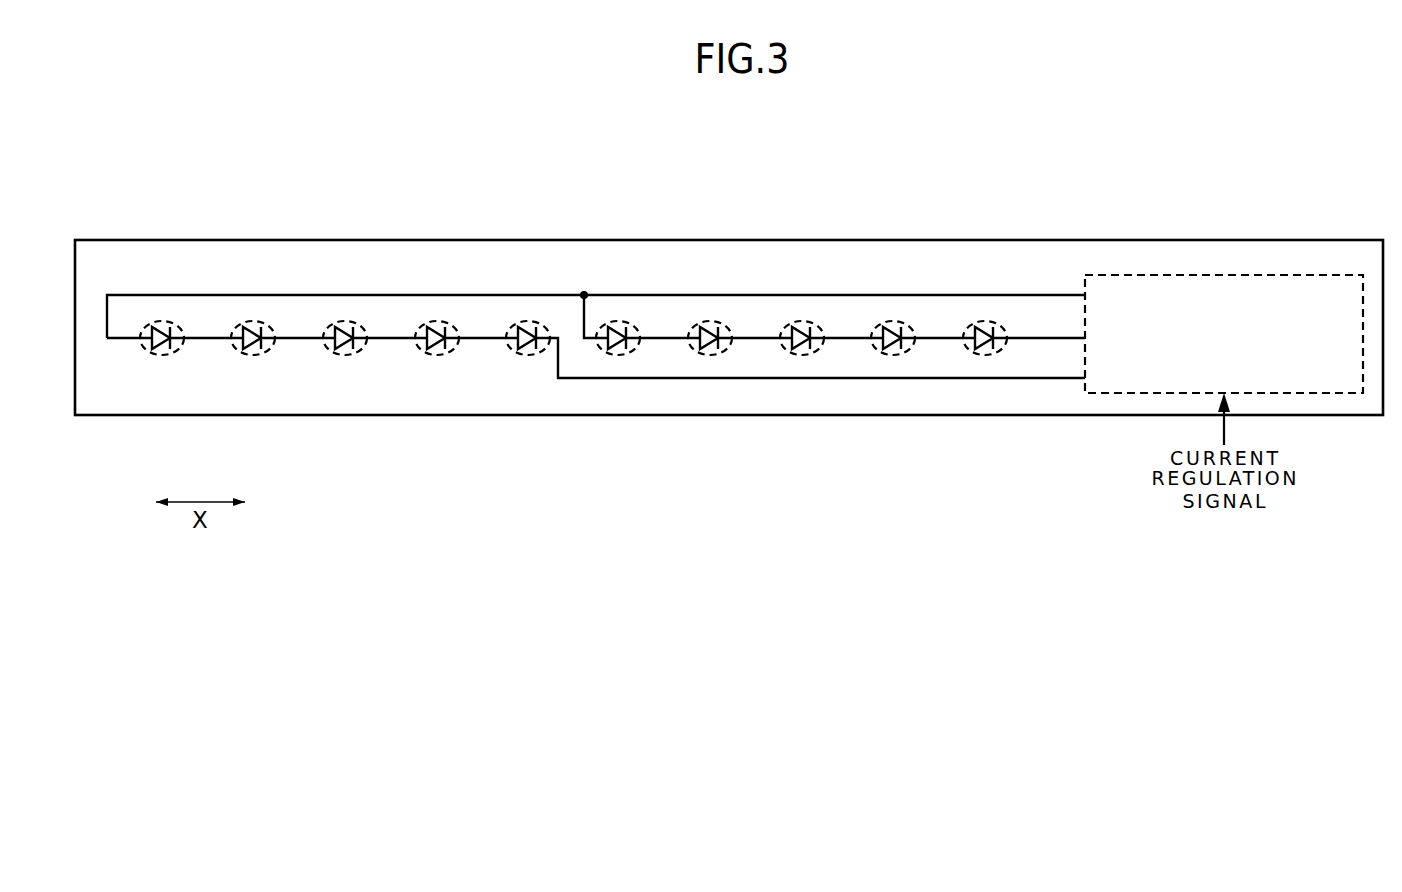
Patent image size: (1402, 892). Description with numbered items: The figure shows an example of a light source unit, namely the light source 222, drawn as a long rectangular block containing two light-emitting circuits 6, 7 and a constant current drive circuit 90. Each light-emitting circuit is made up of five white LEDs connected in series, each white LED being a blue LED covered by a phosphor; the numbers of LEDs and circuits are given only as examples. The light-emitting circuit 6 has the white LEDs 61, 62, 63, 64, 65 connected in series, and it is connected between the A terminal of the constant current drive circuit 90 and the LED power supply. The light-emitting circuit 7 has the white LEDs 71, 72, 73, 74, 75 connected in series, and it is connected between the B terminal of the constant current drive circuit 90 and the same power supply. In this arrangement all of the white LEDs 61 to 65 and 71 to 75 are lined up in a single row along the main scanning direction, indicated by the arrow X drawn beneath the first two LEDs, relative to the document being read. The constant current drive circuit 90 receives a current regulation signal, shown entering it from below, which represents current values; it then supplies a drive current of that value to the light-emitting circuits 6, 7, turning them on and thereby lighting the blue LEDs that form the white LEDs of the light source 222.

The light source 222 is at (110, 415).
The light-emitting circuit 6 is at (1012, 378).
The light-emitting circuit 7 is at (1048, 338).
The white LED 61 is at (162, 355).
The white LED 62 is at (253, 355).
The white LED 63 is at (345, 355).
The white LED 64 is at (437, 355).
The white LED 65 is at (528, 355).
The white LED 71 is at (618, 355).
The white LED 72 is at (710, 355).
The white LED 73 is at (802, 355).
The white LED 74 is at (893, 355).
The white LED 75 is at (985, 355).
The constant current drive circuit 90 is at (1346, 393).